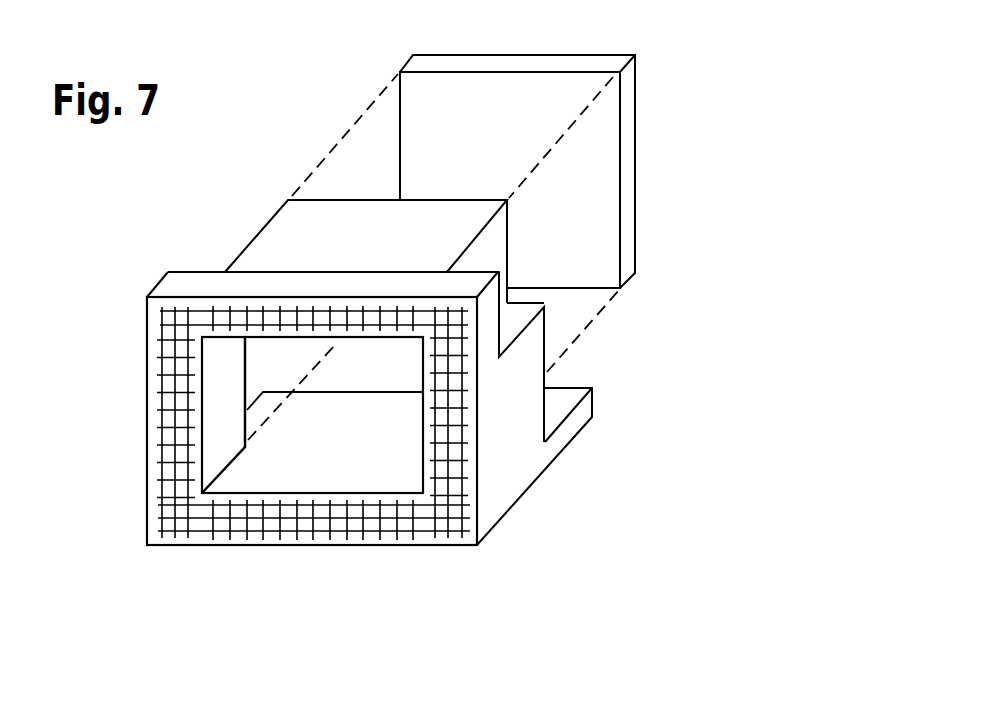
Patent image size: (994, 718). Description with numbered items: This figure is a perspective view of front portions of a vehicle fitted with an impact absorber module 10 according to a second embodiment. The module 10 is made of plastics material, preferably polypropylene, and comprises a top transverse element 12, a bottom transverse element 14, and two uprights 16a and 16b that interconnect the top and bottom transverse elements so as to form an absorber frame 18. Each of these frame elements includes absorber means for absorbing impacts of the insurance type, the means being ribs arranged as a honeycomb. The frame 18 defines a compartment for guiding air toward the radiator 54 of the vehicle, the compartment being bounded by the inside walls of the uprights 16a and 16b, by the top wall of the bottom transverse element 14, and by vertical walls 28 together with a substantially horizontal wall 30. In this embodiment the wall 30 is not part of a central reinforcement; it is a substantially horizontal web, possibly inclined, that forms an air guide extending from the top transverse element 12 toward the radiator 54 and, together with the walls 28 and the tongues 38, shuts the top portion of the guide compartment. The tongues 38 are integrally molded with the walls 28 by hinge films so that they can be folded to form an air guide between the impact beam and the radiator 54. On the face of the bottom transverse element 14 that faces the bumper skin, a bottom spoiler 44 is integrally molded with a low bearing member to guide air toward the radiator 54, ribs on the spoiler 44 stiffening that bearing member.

The impact absorber module 10 is at (182, 222).
The top transverse element 12 is at (197, 282).
The bottom transverse element 14 is at (322, 526).
The upright 16a is at (167, 385).
The upright 16b is at (478, 413).
The absorber frame 18 is at (529, 528).
The vertical walls 28 is at (497, 240).
The substantially horizontal wall 30 is at (285, 242).
The tongues 38 is at (508, 295).
The bottom spoiler 44 is at (290, 469).
The radiator 54 is at (515, 118).